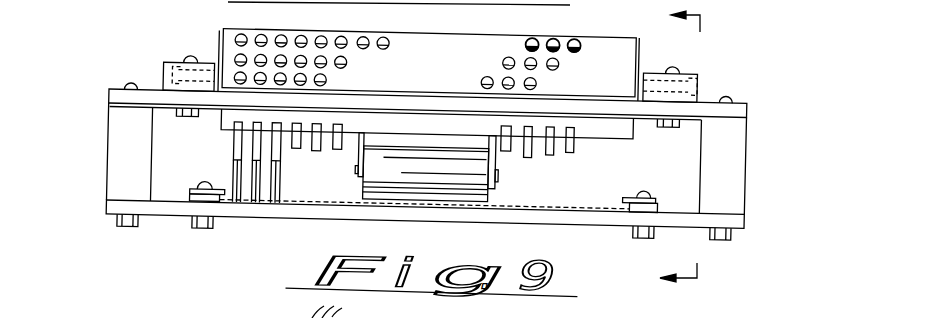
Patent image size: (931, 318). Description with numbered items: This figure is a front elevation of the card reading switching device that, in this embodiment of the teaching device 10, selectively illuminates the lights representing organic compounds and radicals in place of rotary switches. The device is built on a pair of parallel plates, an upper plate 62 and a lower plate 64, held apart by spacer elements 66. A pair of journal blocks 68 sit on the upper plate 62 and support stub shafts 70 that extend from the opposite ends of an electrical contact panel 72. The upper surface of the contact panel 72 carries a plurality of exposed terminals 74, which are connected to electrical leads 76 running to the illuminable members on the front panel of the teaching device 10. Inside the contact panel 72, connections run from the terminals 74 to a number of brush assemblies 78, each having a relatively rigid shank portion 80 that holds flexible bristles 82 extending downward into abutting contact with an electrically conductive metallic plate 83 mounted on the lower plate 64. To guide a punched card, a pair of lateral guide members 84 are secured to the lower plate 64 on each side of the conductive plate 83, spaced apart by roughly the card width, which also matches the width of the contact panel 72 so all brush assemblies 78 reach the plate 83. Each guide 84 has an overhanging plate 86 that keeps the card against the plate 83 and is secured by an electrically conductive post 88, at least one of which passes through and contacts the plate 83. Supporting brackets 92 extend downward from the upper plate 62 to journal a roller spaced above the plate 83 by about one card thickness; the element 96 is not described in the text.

The teaching device 10 is at (667, 148).
The upper plate 62 is at (707, 89).
The lower plate 64 is at (592, 208).
The spacer elements 66 is at (118, 141).
The journal blocks 68 is at (188, 53).
The stub shafts 70 is at (217, 60).
The electrical contact panel 72 is at (437, 60).
The terminals 74 is at (281, 30).
The electrical leads 76 is at (531, 28).
The brush assemblies 78 is at (234, 136).
The shank portion 80 is at (238, 148).
The bristles 82 is at (280, 167).
The electrically conductive metallic plate 83 is at (445, 200).
The lateral guide members 84 is at (191, 190).
The overhanging plate 86 is at (223, 184).
The electrically conductive post 88 is at (658, 186).
The supporting brackets 92 is at (358, 142).
The feet 96 is at (207, 226).